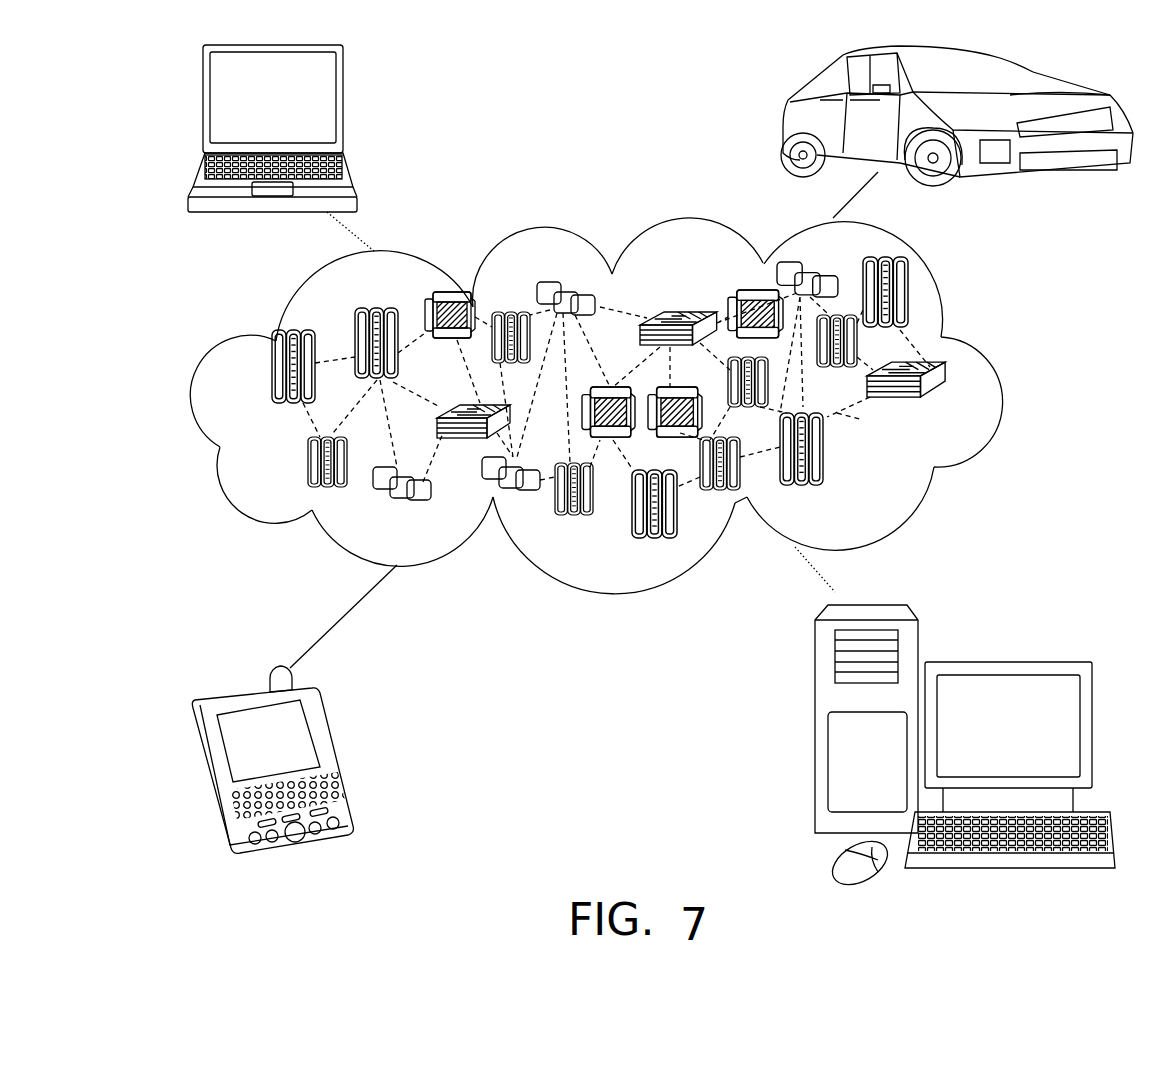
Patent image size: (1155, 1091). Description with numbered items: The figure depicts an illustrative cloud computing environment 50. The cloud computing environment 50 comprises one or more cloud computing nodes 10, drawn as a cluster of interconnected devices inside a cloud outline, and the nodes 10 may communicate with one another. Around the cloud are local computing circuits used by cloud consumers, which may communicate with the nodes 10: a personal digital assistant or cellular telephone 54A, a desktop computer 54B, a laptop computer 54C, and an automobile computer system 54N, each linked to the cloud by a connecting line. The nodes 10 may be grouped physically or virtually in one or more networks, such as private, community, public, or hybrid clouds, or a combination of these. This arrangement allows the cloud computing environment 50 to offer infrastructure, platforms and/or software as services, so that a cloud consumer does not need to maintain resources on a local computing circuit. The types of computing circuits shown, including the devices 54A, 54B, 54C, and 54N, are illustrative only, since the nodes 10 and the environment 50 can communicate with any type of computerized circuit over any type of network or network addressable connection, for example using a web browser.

The cloud computing node 10 is at (661, 397).
The cloud computing environment 50 is at (1007, 378).
The personal digital assistant or cellular telephone 54A is at (332, 757).
The desktop computer 54B is at (1003, 662).
The laptop computer 54C is at (342, 108).
The automobile computer system 54N is at (785, 123).